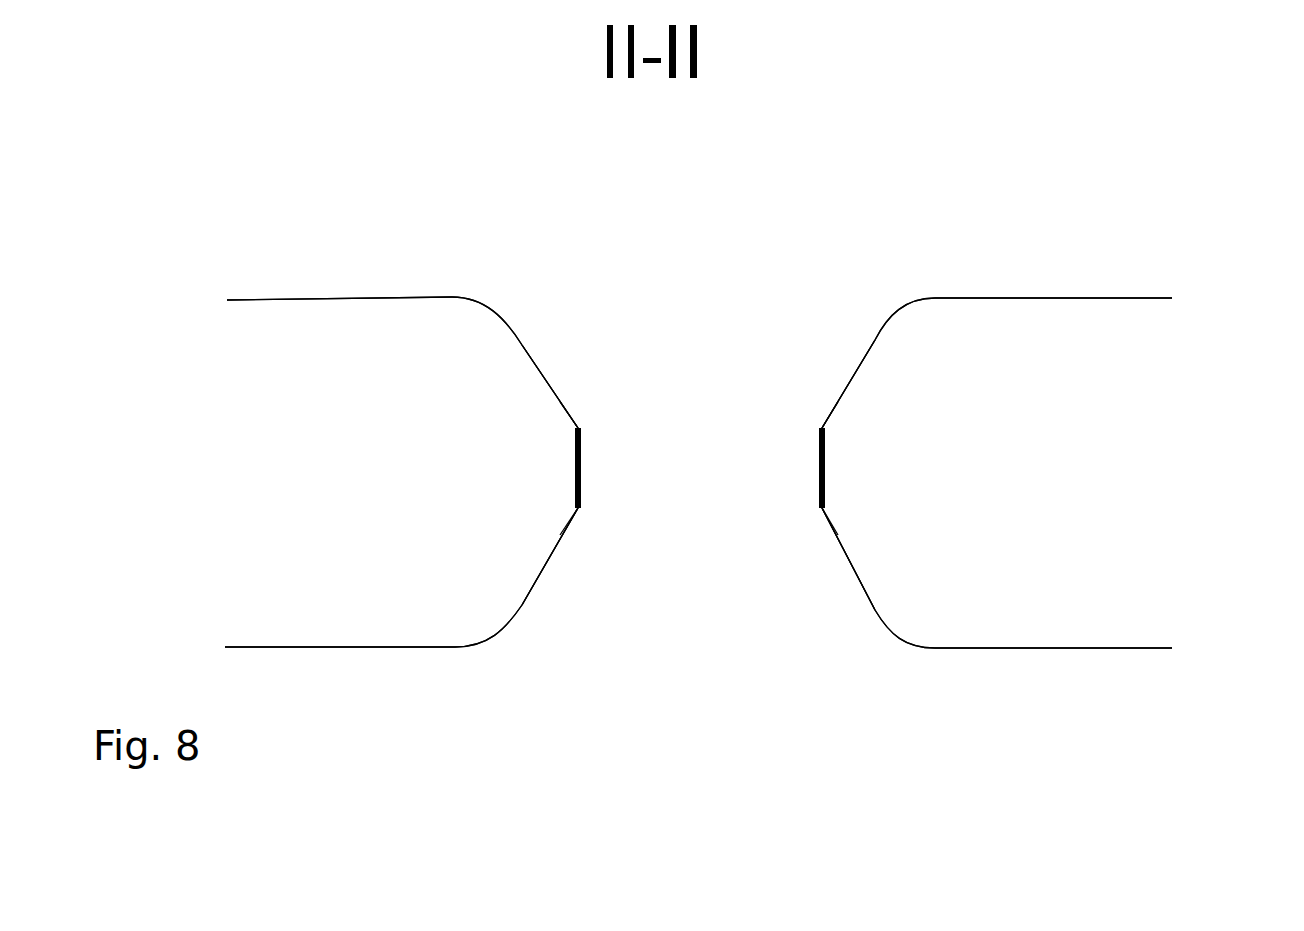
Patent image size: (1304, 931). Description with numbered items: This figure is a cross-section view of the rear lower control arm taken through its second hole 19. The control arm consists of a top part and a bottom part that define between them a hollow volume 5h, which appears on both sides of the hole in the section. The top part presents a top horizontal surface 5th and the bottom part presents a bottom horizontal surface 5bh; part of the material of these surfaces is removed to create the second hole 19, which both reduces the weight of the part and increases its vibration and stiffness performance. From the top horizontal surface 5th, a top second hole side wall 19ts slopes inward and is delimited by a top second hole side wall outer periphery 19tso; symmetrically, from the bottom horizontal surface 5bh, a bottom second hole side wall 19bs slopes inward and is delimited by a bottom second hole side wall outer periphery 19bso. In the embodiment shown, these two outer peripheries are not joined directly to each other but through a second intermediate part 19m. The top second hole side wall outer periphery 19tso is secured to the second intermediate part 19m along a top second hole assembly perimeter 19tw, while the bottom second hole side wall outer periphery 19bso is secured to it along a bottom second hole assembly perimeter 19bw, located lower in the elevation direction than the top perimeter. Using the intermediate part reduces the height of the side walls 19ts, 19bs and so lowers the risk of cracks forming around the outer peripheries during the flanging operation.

The second hole 19 is at (877, 258).
The top horizontal surface 5th is at (300, 288).
The bottom horizontal surface 5bh is at (373, 660).
The hollow volume 5h is at (268, 546).
The top second hole side wall 19ts is at (858, 361).
The top second hole side wall outer periphery 19tso is at (817, 418).
The top second hole assembly perimeter 19tw is at (562, 428).
The second intermediate part 19m is at (565, 470).
The bottom second hole assembly perimeter 19bw is at (565, 505).
The bottom second hole side wall outer periphery 19bso is at (808, 516).
The bottom second hole side wall 19bs is at (854, 598).